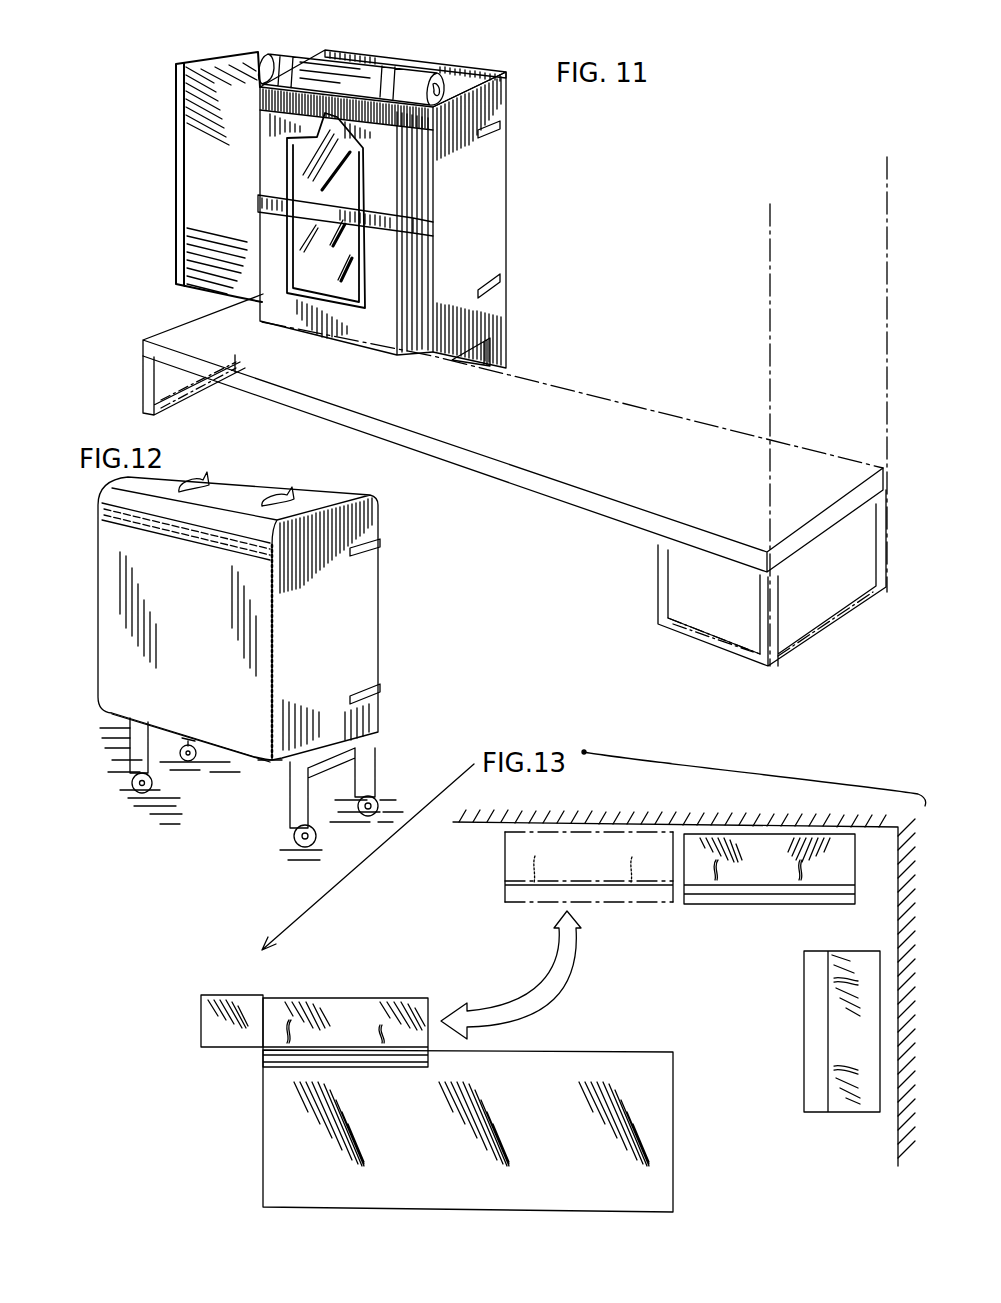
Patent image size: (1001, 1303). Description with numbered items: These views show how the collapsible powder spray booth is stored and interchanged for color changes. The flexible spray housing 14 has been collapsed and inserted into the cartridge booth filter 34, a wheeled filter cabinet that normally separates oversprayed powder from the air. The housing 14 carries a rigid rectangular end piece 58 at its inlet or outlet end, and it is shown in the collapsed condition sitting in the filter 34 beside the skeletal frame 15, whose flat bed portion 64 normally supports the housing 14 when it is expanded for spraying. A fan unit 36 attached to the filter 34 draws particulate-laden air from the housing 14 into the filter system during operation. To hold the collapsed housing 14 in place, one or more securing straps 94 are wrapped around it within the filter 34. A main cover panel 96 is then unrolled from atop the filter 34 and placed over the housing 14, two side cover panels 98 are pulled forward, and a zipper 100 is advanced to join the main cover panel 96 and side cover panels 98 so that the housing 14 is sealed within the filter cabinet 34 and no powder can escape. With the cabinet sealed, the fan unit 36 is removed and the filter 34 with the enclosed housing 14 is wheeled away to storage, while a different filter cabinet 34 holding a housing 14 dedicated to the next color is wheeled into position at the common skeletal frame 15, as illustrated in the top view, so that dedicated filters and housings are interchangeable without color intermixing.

In FIG. 11, the spray housing 14 is at (400, 293).
In FIG. 11, the skeletal frame 15 is at (903, 485).
In FIG. 13, the skeletal frame 15 is at (457, 1222).
In FIG. 11, the cartridge booth filter 34 is at (490, 167).
In FIG. 12, the cartridge booth filter 34 is at (363, 611).
In FIG. 13, the cartridge booth filter 34 is at (606, 873).
In FIG. 11, the fan unit 36 is at (192, 107).
In FIG. 13, the fan unit 36 is at (238, 973).
In FIG. 11, the end piece 58 is at (377, 330).
In FIG. 11, the flat bed portion 64 is at (632, 450).
In FIG. 11, the securing strap 94 is at (413, 225).
In FIG. 11, the main cover panel 96 is at (266, 68).
In FIG. 12, the main cover panel 96 is at (232, 723).
In FIG. 12, the side cover panel 98 is at (288, 740).
In FIG. 12, the zipper 100 is at (270, 628).